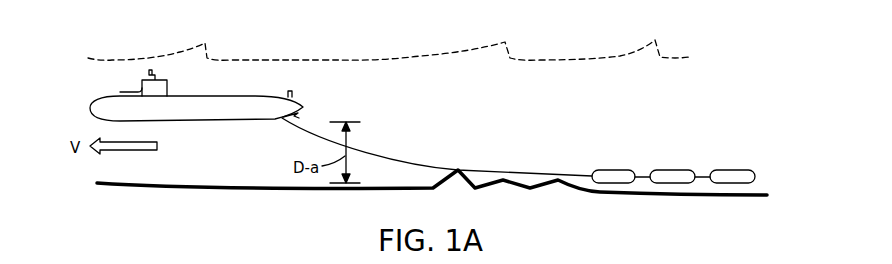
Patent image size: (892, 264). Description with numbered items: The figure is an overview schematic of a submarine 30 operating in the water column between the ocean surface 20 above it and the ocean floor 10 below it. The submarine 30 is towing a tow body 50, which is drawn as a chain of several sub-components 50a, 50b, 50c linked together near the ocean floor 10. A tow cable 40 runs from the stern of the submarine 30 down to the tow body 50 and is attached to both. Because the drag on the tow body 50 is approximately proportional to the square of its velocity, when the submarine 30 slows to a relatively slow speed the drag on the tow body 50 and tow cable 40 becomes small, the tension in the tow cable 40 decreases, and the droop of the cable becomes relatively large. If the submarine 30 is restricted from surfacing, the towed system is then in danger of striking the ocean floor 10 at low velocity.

The ocean floor 10 is at (205, 185).
The ocean surface 20 is at (240, 55).
The submarine 30 is at (95, 102).
The tow cable 40 is at (428, 164).
The tow body 50 is at (673, 168).
The sub-component of the tow body 50a is at (612, 183).
The sub-component of the tow body 50b is at (672, 183).
The sub-component of the tow body 50c is at (731, 183).